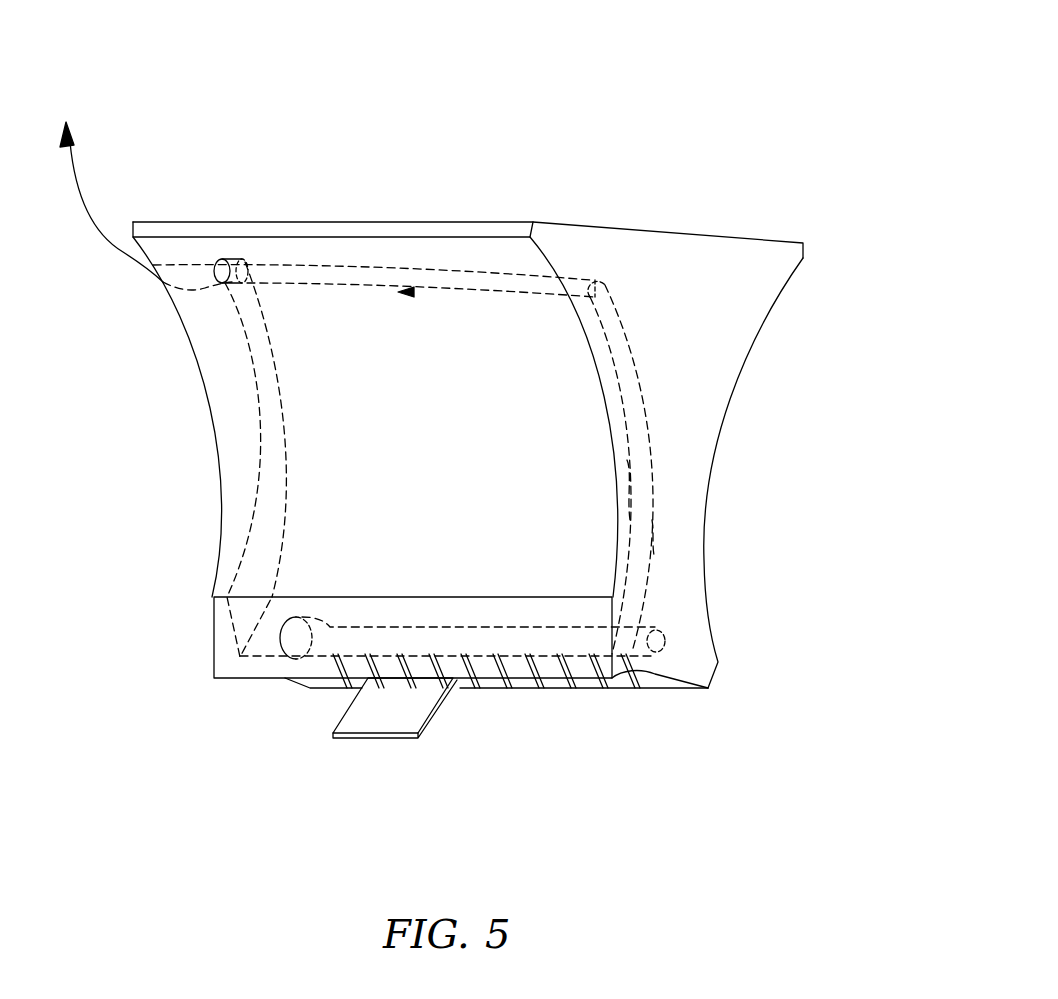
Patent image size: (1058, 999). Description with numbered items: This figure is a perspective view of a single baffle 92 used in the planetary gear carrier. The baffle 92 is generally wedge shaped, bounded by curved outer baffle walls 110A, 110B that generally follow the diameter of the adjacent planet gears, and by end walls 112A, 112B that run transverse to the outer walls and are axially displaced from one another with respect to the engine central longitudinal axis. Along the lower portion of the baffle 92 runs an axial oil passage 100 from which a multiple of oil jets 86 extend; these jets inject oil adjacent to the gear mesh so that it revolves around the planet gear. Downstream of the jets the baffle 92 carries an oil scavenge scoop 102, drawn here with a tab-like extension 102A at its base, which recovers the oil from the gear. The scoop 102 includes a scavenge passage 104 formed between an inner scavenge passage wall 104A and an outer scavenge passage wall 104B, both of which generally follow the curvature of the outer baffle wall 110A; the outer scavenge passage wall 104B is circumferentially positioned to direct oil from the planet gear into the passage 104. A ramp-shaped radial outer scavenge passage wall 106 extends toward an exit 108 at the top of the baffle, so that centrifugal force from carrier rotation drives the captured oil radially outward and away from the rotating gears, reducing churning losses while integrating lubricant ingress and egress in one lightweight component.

The baffle 92 is at (730, 84).
The end wall 112B is at (752, 270).
The outer baffle wall 110B is at (765, 317).
The outer baffle wall 110A is at (218, 405).
The end wall 112A is at (205, 478).
The exit 108 is at (213, 278).
The radial outer scavenge passage wall 106 is at (600, 282).
The scavenge passage 104 is at (652, 448).
The inner scavenge passage wall 104A is at (632, 484).
The outer scavenge passage wall 104B is at (652, 535).
The axial oil passage 100 is at (610, 648).
The oil scavenge scoop 102 is at (206, 645).
The mounting tab 102A is at (407, 722).
The oil jets 86 is at (540, 685).